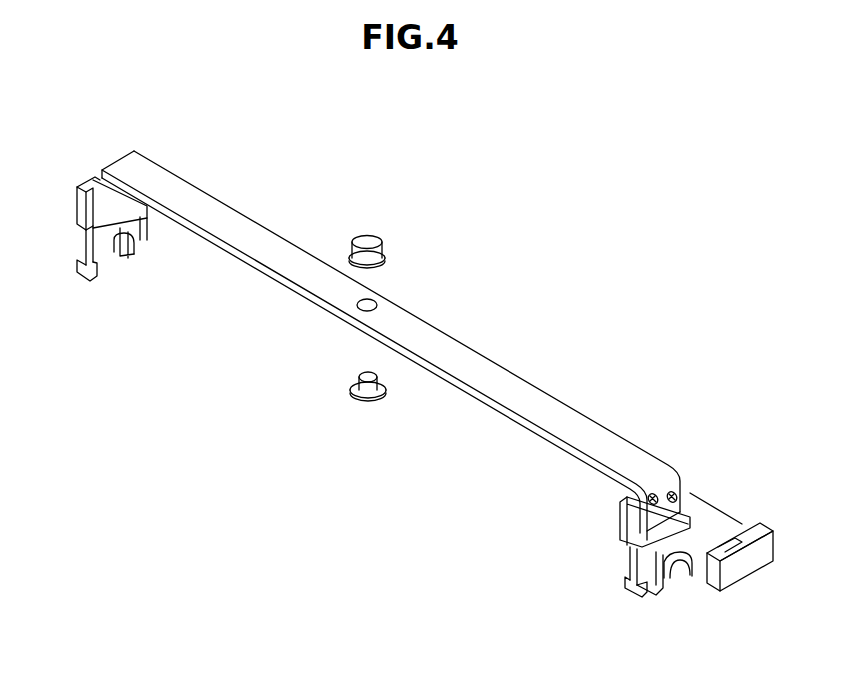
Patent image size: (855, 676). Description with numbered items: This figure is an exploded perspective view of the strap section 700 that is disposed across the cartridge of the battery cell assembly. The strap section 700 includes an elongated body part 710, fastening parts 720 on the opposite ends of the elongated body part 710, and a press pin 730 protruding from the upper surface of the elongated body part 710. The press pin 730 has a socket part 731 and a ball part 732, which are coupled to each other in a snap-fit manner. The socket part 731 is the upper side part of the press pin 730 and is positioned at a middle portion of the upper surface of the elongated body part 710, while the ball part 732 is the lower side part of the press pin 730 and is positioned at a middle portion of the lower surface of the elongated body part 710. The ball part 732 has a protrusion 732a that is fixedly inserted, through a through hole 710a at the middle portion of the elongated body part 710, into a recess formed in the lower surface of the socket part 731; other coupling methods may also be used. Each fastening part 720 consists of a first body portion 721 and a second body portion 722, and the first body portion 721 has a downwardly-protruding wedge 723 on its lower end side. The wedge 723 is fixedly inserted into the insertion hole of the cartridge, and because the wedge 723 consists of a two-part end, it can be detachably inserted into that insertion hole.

The strap section 700 is at (503, 202).
The elongated body part 710 is at (255, 242).
The through hole 710a is at (357, 304).
The fastening part 720 is at (52, 205).
The first body portion 721 is at (620, 512).
The second body portion 722 is at (715, 585).
The wedge 723 is at (630, 570).
The press pin 730 is at (363, 163).
The socket part 731 is at (365, 240).
The ball part 732 is at (388, 388).
The protrusion 732a is at (360, 373).